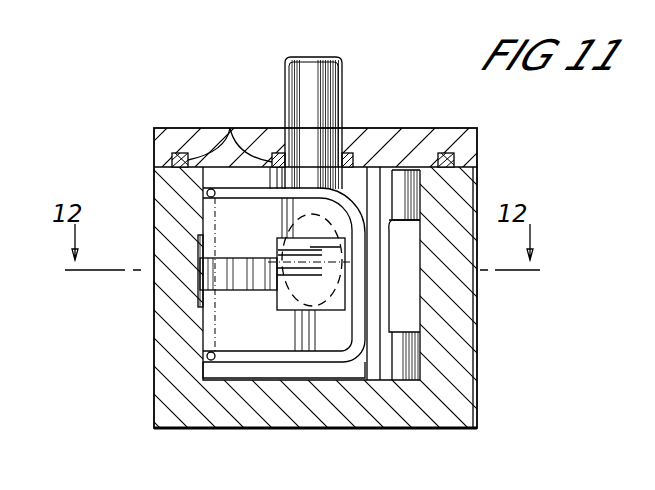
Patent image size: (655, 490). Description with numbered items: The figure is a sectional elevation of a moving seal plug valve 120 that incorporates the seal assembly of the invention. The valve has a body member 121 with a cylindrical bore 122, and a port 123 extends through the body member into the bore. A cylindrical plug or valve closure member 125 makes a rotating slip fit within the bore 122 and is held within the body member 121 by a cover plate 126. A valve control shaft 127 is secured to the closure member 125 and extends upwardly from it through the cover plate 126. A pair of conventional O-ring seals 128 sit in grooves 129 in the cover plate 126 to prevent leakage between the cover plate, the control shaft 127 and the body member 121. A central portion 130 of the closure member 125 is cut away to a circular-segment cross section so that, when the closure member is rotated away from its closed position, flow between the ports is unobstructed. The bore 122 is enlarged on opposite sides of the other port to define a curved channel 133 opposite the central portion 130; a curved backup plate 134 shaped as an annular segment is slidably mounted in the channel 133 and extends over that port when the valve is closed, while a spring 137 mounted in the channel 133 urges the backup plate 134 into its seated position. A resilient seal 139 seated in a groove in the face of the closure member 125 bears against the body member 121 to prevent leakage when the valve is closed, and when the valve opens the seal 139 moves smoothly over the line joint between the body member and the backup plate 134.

The moving seal plug valve 120 is at (150, 97).
The body member 121 is at (457, 320).
The cylindrical bore 122 is at (424, 297).
The port 123 is at (318, 248).
The valve closure member 125 is at (400, 322).
The cover plate 126 is at (432, 128).
The valve control shaft 127 is at (342, 98).
The O-ring seals 128 is at (230, 128).
The grooves 129 is at (172, 158).
The central portion 130 is at (401, 216).
The curved channel 133 is at (198, 312).
The backup plate 134 is at (287, 315).
The spring 137 is at (250, 257).
The resilient seal 139 is at (348, 348).